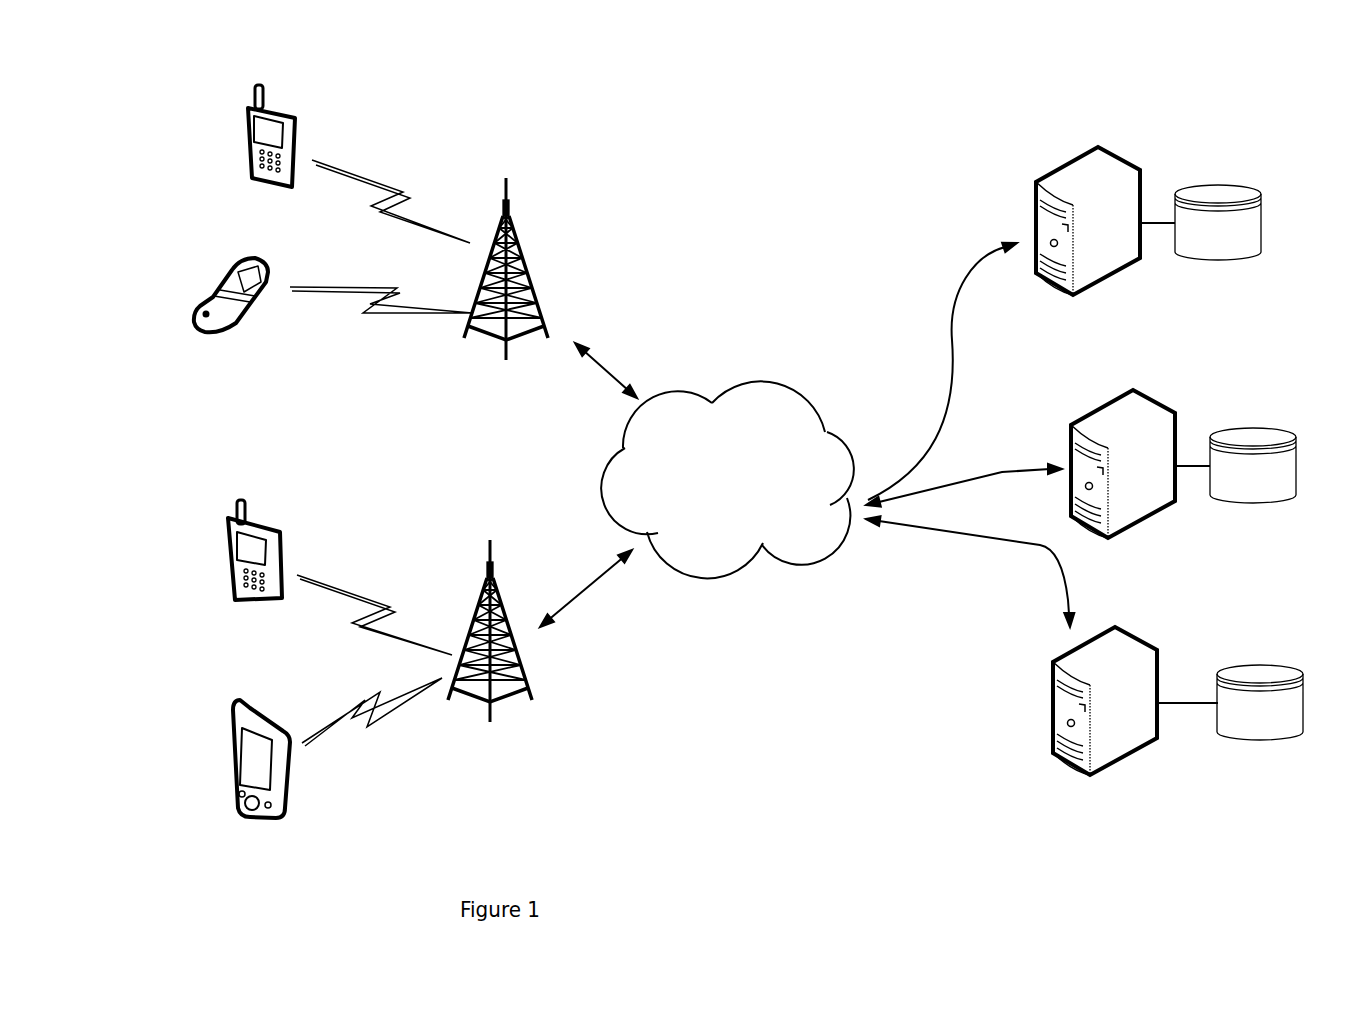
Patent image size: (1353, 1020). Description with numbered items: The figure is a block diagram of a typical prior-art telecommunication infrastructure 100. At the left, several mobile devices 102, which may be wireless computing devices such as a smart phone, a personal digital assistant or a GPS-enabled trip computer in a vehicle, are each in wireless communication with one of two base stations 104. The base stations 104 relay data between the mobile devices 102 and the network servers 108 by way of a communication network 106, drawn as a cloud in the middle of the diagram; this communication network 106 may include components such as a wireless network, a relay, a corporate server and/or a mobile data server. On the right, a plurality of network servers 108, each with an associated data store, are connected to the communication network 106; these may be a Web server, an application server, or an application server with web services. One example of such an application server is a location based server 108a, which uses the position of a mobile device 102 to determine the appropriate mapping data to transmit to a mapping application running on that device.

The telecommunication infrastructure 100 is at (644, 181).
The mobile devices 102 is at (248, 142).
The base stations 104 is at (500, 210).
The communication network 106 is at (760, 388).
The network servers 108 is at (1092, 157).
The location based server 108a is at (1122, 640).